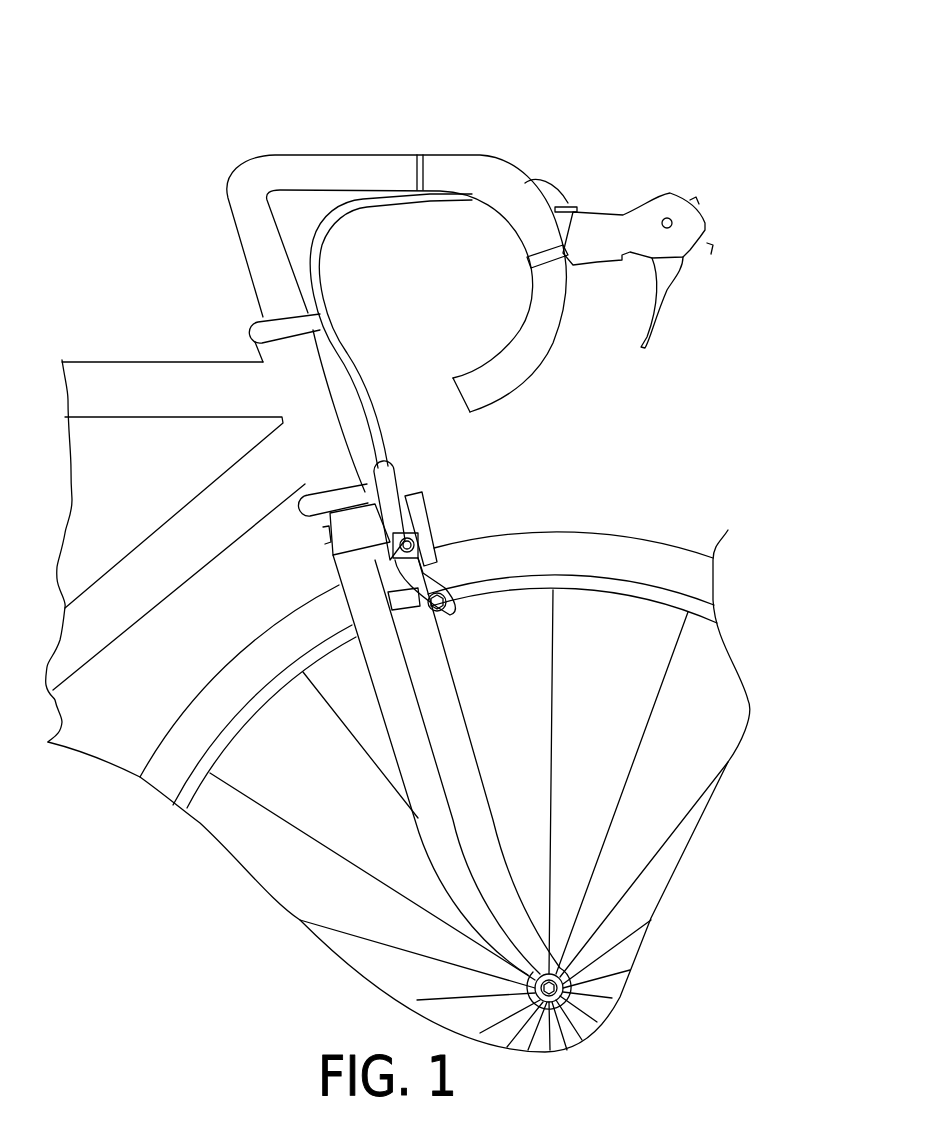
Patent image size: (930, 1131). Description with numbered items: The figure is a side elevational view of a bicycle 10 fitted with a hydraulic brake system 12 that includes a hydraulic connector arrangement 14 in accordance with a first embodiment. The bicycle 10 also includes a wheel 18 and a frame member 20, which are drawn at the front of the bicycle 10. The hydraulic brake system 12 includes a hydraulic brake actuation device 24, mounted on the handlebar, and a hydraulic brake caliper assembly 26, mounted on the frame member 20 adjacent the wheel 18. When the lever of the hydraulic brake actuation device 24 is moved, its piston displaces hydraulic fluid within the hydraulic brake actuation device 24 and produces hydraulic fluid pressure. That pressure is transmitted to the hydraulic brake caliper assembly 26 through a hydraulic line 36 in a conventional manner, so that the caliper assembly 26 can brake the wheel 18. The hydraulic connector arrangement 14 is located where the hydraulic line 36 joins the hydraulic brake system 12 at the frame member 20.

The bicycle 10 is at (500, 55).
The hydraulic brake system 12 is at (597, 380).
The hydraulic connector arrangement 14 is at (390, 466).
The wheel 18 is at (632, 553).
The frame member 20 is at (343, 517).
The hydraulic brake actuation device 24 is at (597, 253).
The hydraulic brake caliper assembly 26 is at (415, 498).
The hydraulic line 36 is at (337, 347).